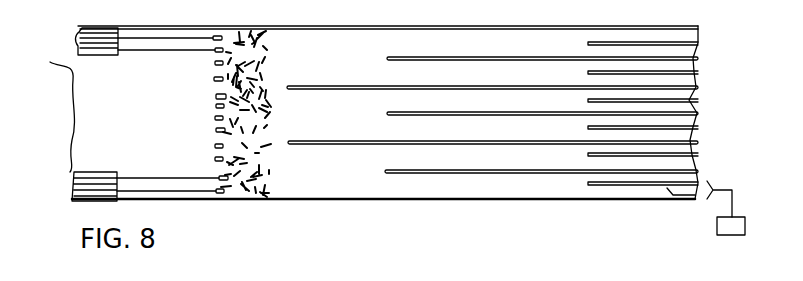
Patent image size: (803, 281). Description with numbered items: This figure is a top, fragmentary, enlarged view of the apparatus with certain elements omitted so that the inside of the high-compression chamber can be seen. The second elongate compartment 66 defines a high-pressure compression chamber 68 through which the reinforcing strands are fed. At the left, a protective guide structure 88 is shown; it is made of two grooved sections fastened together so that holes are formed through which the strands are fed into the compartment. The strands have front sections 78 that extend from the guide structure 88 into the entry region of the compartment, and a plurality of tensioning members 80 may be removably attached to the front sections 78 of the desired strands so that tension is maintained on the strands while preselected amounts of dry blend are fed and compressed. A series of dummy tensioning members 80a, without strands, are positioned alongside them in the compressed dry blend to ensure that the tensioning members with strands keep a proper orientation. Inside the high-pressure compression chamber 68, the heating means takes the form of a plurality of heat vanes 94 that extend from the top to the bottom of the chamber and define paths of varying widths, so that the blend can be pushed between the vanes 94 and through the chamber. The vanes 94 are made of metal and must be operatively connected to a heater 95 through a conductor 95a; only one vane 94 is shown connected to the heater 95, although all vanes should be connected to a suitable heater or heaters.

The second elongate compartment 66 is at (413, 26).
The high-pressure compression chamber 68 is at (343, 71).
The front sections of strands 78 is at (140, 51).
The tensioning members 80 is at (214, 50).
The dummy tensioning members 80a is at (216, 130).
The protective guide structure 88 is at (80, 24).
The heat vanes 94 is at (357, 144).
The heater 95 is at (717, 230).
The conductor 95a is at (733, 200).